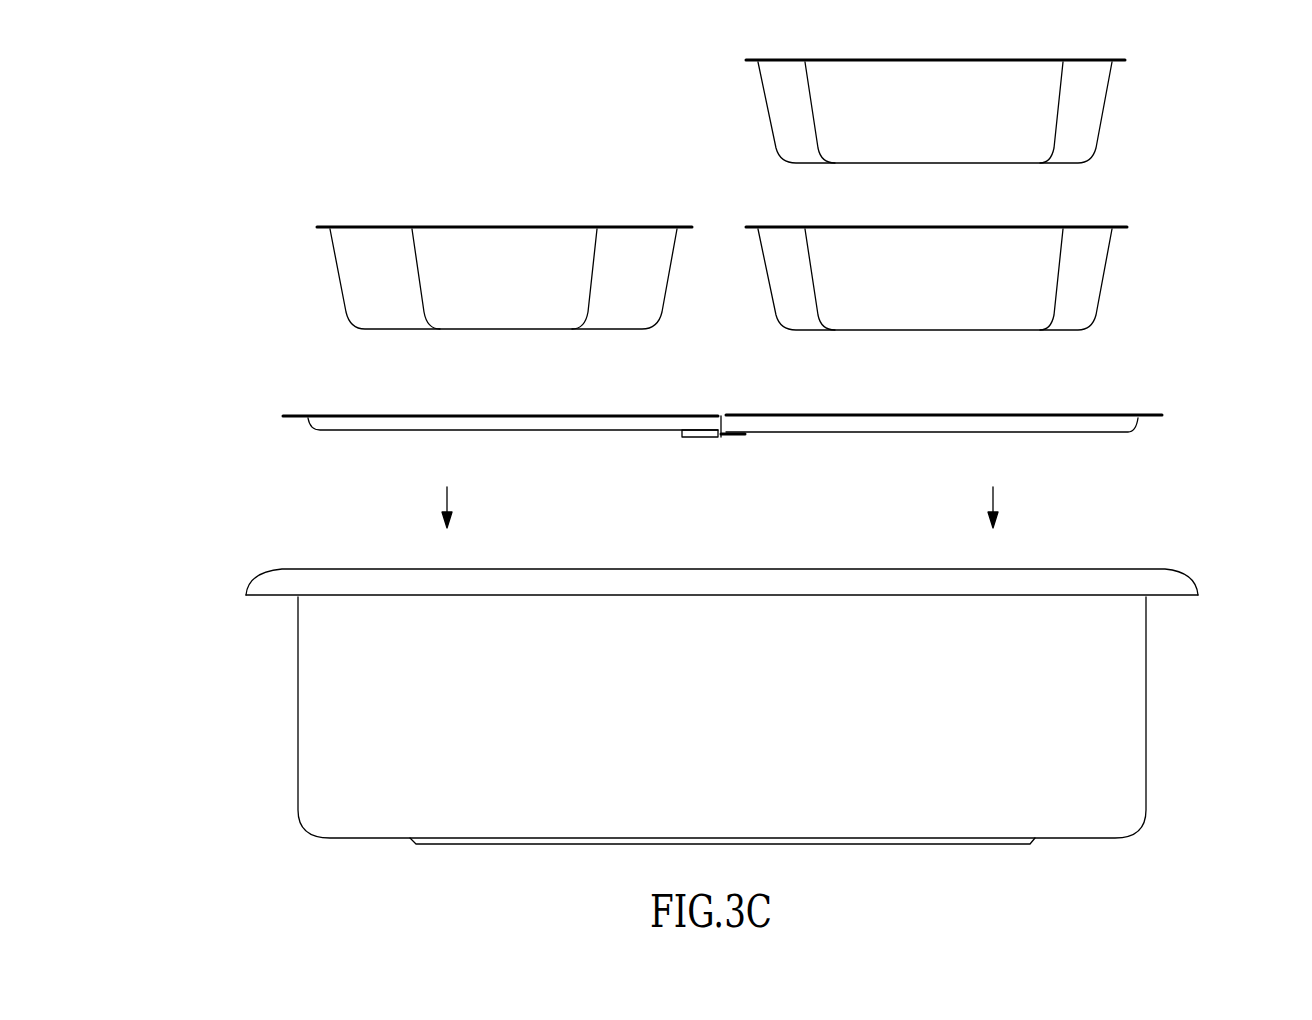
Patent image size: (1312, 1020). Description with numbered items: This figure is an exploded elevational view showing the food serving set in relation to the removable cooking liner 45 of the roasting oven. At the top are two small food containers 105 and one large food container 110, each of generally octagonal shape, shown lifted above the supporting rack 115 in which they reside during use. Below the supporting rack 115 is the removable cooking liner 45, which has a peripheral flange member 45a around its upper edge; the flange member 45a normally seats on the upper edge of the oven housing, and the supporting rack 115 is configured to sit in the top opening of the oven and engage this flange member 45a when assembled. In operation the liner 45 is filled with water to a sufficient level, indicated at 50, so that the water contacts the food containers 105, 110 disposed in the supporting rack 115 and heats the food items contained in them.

The small food container 105 is at (1108, 92).
The large food container 110 is at (360, 226).
The supporting rack 115 is at (1135, 432).
The removable cooking liner 45 is at (1135, 740).
The peripheral flange member 45a is at (1170, 580).
The water level 50 is at (724, 683).